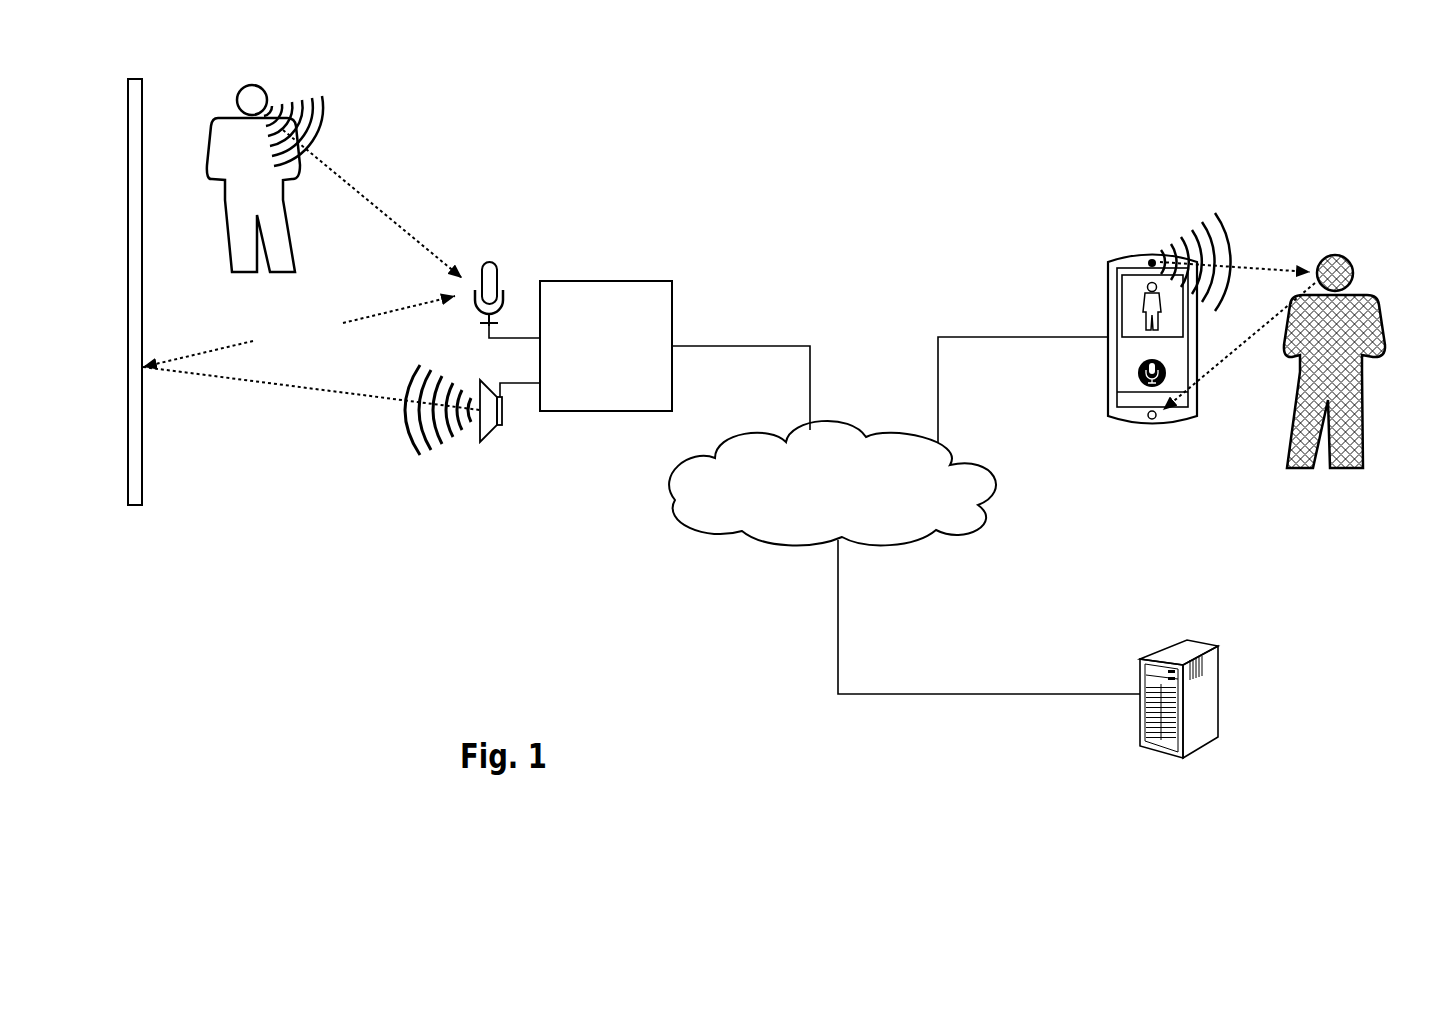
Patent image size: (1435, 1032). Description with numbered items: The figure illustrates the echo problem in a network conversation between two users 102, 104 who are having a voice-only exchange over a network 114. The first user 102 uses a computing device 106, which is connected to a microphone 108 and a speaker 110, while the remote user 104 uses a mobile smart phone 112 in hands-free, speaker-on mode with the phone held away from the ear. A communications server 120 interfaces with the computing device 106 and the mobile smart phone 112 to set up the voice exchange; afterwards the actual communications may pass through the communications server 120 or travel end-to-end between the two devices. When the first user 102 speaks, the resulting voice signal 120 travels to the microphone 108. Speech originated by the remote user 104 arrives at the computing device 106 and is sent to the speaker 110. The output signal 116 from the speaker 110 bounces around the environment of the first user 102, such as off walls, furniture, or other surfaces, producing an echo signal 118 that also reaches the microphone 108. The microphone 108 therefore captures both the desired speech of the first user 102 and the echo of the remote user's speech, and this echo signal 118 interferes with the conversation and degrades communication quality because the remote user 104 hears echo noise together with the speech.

The user 102 is at (250, 93).
The user 104 is at (1338, 270).
The computing device 106 is at (605, 298).
The microphone 108 is at (490, 268).
The speaker 110 is at (490, 445).
The mobile smart phone 112 is at (1122, 377).
The network 114 is at (975, 502).
The output signal 116 is at (305, 414).
The echo signal 118 is at (383, 298).
The communications server 120 is at (400, 186).